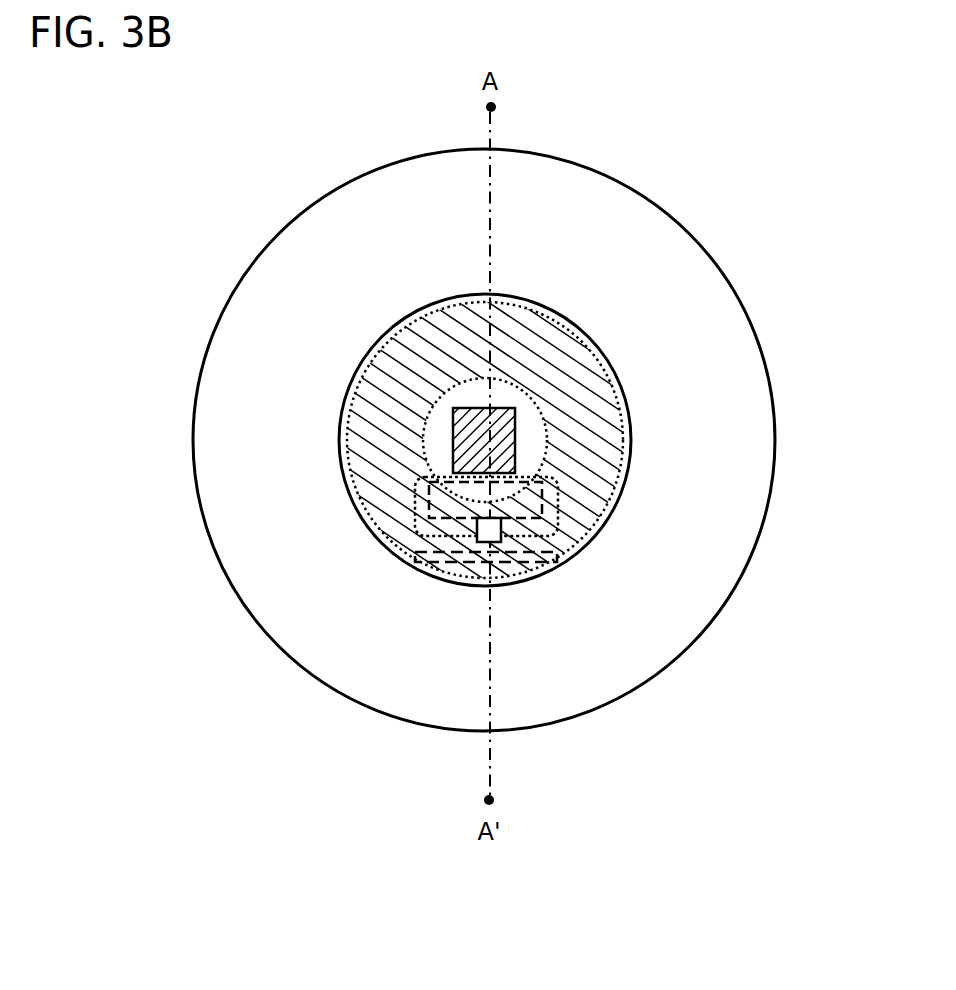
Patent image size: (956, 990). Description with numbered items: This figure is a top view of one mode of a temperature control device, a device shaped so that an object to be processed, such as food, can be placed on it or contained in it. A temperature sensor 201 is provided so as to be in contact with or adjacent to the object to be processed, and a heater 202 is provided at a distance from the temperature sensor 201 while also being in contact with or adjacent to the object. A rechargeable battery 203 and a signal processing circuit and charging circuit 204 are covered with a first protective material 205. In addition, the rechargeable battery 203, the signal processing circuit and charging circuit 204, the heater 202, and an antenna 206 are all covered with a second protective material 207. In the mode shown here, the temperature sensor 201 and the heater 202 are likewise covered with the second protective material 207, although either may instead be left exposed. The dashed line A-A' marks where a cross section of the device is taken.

The temperature sensor 201 is at (453, 455).
The heater 202 is at (390, 372).
The rechargeable battery 203 is at (529, 518).
The signal processing circuit and charging circuit 204 is at (477, 538).
The first protective material 205 is at (415, 527).
The antenna 206 is at (443, 558).
The second protective material 207 is at (593, 537).